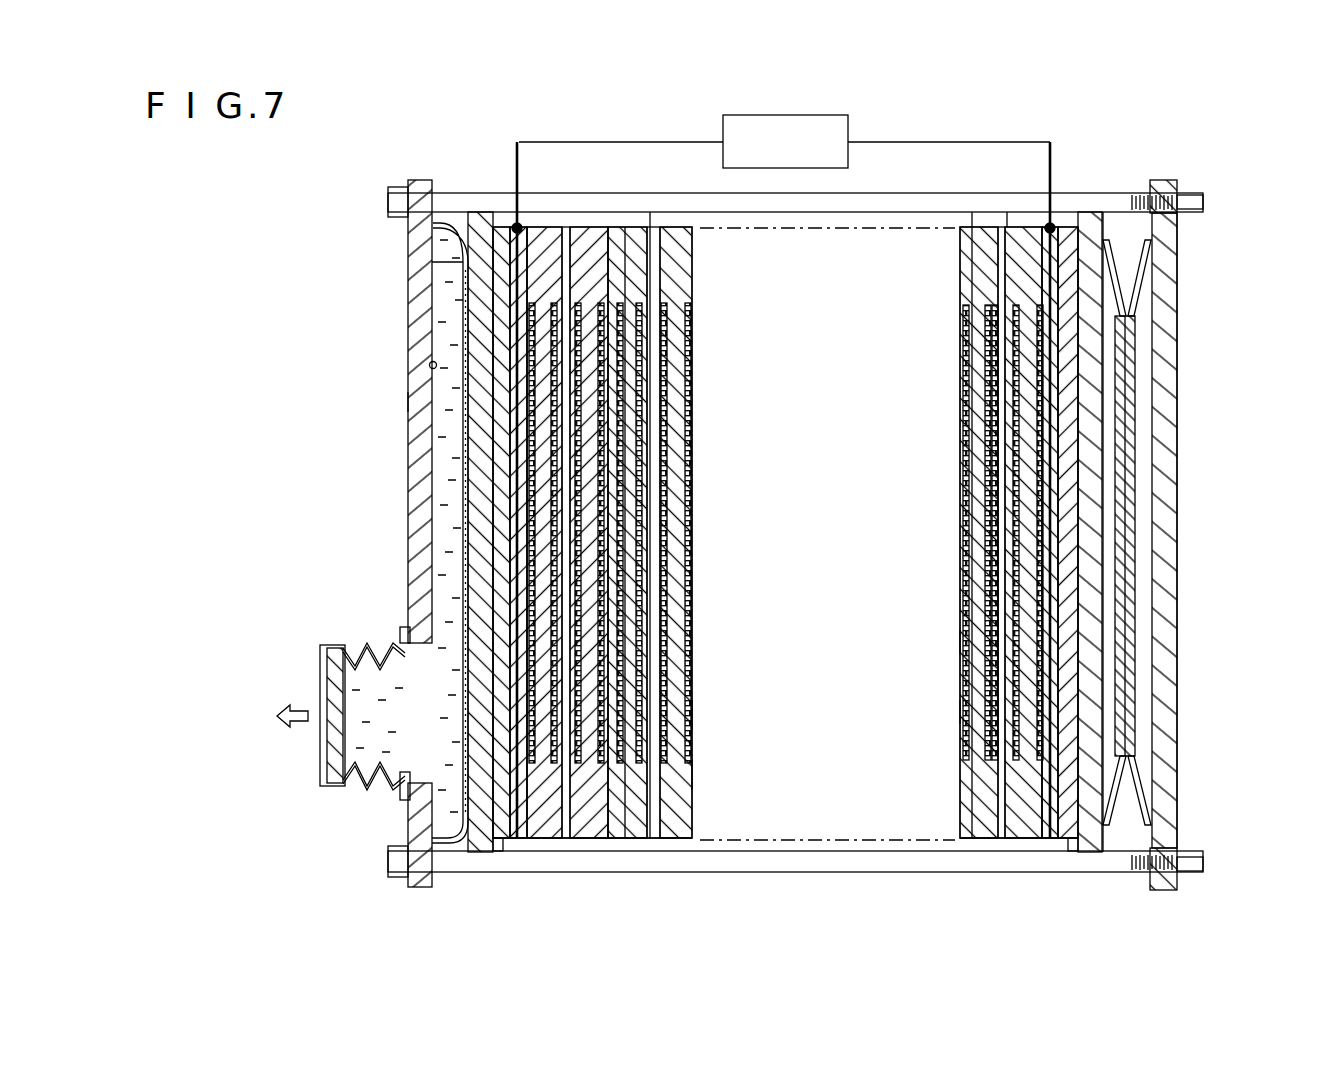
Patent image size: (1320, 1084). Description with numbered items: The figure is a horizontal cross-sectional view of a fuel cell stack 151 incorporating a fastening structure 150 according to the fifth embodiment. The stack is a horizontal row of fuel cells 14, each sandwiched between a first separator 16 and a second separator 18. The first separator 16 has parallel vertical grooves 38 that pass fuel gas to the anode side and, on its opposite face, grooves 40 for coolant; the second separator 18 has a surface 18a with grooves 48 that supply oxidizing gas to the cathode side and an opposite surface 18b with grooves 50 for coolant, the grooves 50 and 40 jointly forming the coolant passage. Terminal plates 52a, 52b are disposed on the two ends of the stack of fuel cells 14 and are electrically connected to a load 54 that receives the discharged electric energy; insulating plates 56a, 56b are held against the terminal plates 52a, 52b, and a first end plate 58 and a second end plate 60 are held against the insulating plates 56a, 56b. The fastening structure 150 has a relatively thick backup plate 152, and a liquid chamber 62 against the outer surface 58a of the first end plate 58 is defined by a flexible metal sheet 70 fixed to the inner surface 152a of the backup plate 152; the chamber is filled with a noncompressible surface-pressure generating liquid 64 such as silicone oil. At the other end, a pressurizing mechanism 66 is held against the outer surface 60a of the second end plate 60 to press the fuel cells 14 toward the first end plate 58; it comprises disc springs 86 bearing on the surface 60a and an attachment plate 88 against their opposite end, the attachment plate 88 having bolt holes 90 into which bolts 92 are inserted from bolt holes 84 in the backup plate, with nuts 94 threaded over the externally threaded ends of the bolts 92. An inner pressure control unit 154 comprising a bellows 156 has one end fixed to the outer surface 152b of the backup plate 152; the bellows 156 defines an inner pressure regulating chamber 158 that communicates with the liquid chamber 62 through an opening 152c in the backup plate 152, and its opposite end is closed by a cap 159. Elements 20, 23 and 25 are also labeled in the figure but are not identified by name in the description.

The fuel cells 14 is at (650, 221).
The first separator 16 is at (684, 279).
The second separator 18 is at (621, 223).
The surface of second separator 18a is at (961, 642).
The opposite surface of second separator 18b is at (961, 712).
The lead 20 is at (656, 847).
The spacer 23 is at (692, 590).
The spacer 25 is at (692, 627).
The grooves 38 is at (669, 450).
The grooves 40 is at (691, 417).
The grooves 48 is at (973, 385).
The grooves 50 is at (966, 347).
The terminal plate 52a is at (513, 843).
The terminal plate 52b is at (1052, 840).
The load 54 is at (850, 118).
The insulating plate 56a is at (498, 843).
The insulating plate 56b is at (1078, 840).
The first end plate 58 is at (476, 210).
The outer surface of first end plate 58a is at (413, 257).
The second end plate 60 is at (1086, 221).
The outer surface of second end plate 60a is at (1104, 337).
The liquid chamber 62 is at (443, 507).
The noncompressible surface-pressure generating liquid 64 is at (438, 440).
The pressurizing mechanism 66 is at (1142, 451).
The flexible metal sheet 70 is at (455, 578).
The bolt holes 84 is at (433, 863).
The disc springs 86 is at (1136, 582).
The attachment plate 88 is at (1184, 729).
The bolt holes 90 is at (1198, 207).
The bolts 92 is at (868, 202).
The nuts 94 is at (1180, 186).
The fastening structure 150 is at (436, 166).
The fuel cell stack 151 is at (1175, 128).
The backup plate 152 is at (405, 331).
The inner surface of backup plate 152a is at (430, 365).
The outer surface of backup plate 152b is at (407, 400).
The opening 152c is at (398, 778).
The inner pressure control unit 154 is at (354, 792).
The bellows 156 is at (340, 650).
The inner pressure regulating chamber 158 is at (323, 763).
The cap 159 is at (327, 745).